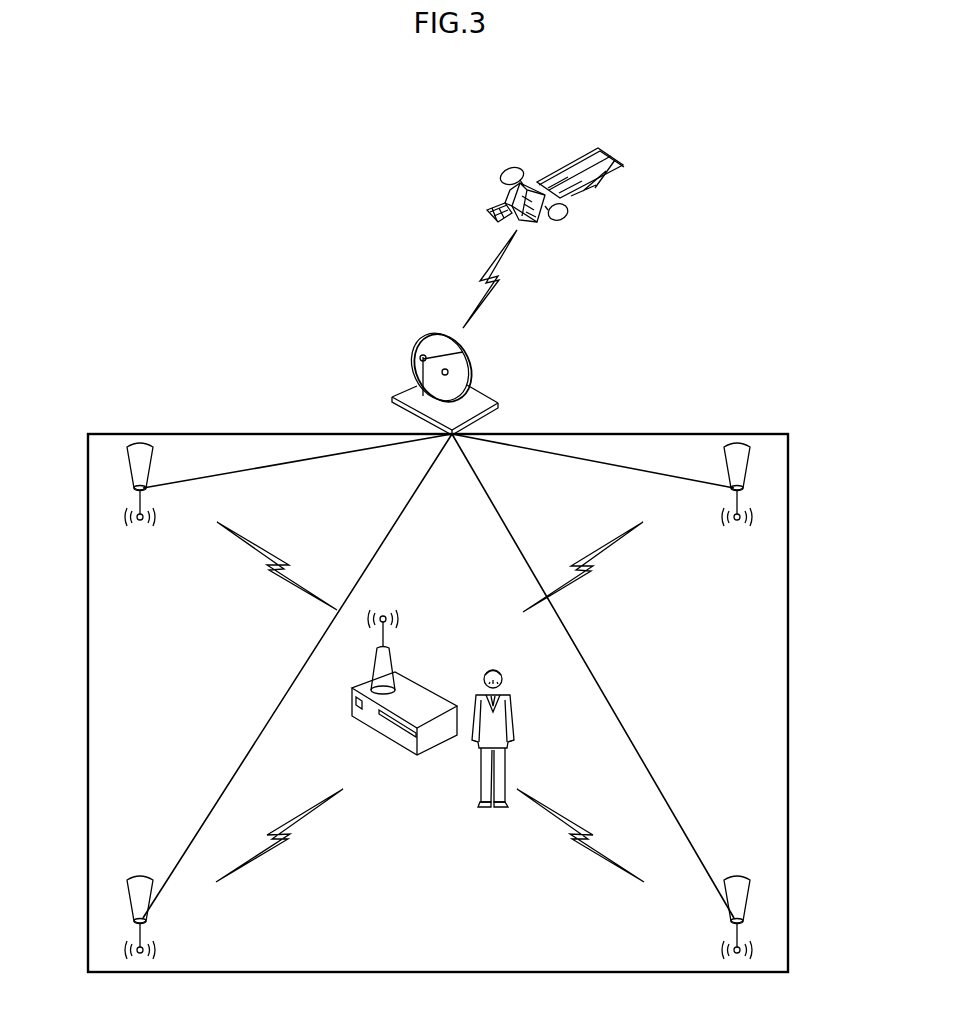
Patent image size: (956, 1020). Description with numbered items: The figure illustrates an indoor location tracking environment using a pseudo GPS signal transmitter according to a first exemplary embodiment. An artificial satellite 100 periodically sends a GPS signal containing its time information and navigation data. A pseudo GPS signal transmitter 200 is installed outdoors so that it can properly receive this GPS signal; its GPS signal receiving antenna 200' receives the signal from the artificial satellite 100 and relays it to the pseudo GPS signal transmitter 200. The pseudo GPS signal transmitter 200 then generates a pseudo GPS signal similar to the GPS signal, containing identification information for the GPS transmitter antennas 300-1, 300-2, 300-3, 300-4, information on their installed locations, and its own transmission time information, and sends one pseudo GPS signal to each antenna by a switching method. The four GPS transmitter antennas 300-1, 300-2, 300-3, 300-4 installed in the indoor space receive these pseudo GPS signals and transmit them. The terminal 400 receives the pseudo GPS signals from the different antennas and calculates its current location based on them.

The artificial satellite 100 is at (534, 180).
The pseudo GPS signal transmitter 200 is at (466, 390).
The GPS signal receiving antenna 200' is at (408, 365).
The GPS transmitter antenna 300-1 is at (141, 440).
The GPS transmitter antenna 300-2 is at (738, 440).
The GPS transmitter antenna 300-3 is at (141, 873).
The GPS transmitter antenna 300-4 is at (738, 873).
The terminal 400 is at (425, 682).